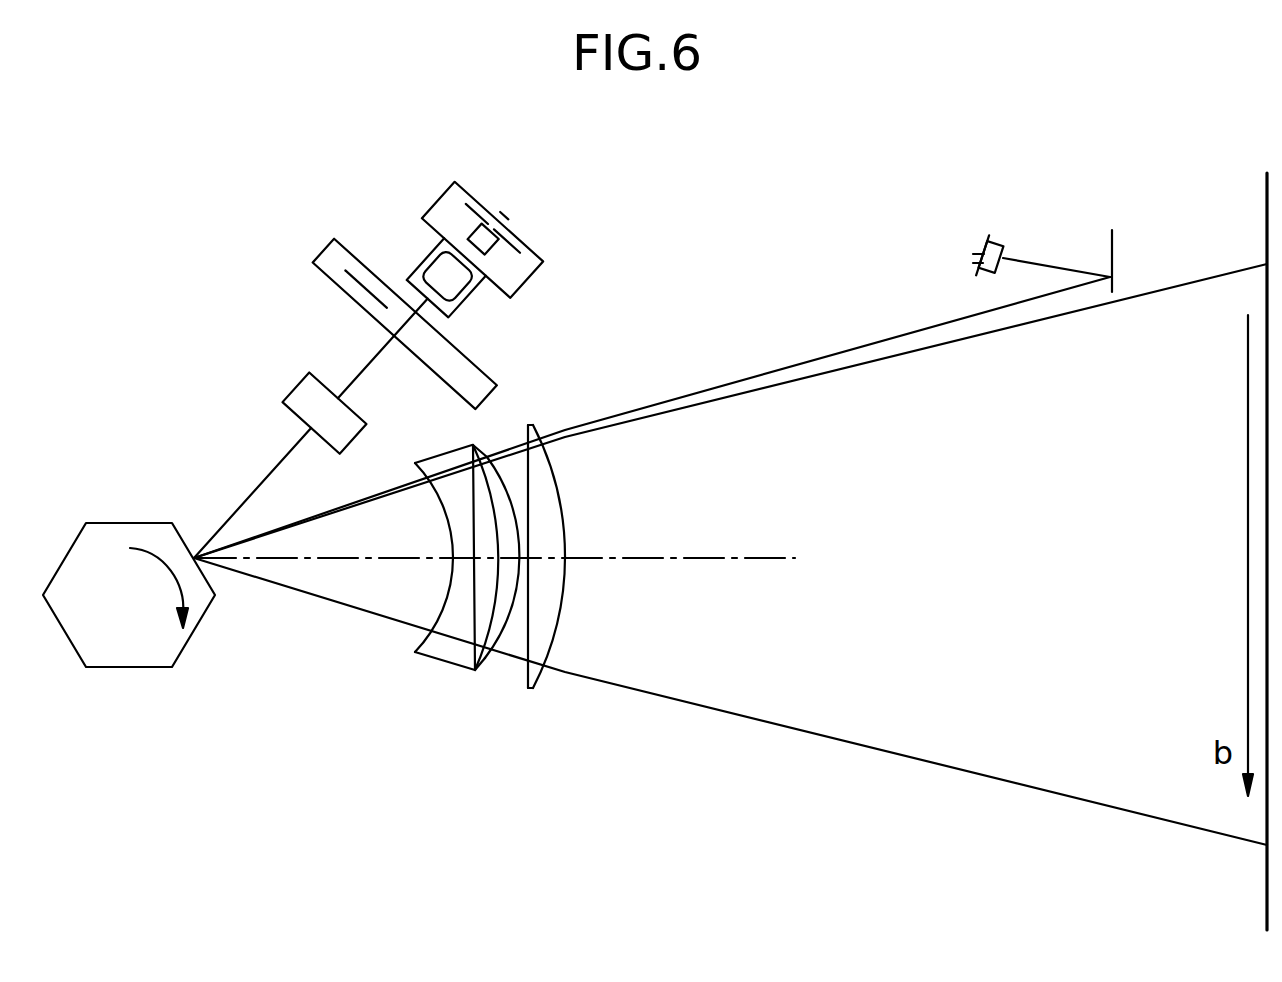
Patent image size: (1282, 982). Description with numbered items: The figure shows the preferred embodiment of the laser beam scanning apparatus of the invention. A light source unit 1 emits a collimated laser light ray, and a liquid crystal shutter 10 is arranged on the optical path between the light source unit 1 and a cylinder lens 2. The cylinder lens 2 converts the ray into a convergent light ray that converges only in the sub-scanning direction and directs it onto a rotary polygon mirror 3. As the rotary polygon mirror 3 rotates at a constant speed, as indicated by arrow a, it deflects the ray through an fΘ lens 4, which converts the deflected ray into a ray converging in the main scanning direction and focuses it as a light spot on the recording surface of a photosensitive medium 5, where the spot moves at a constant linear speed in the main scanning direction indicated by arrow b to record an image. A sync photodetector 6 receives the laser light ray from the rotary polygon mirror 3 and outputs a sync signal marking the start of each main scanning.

The light source unit 1 is at (477, 192).
The cylinder lens 2 is at (296, 386).
The rotary polygon mirror 3 is at (113, 667).
The fΘ lens 4 is at (466, 684).
The photosensitive medium 5 is at (1266, 902).
The sync photodetector 6 is at (998, 246).
The liquid crystal shutter 10 is at (322, 252).